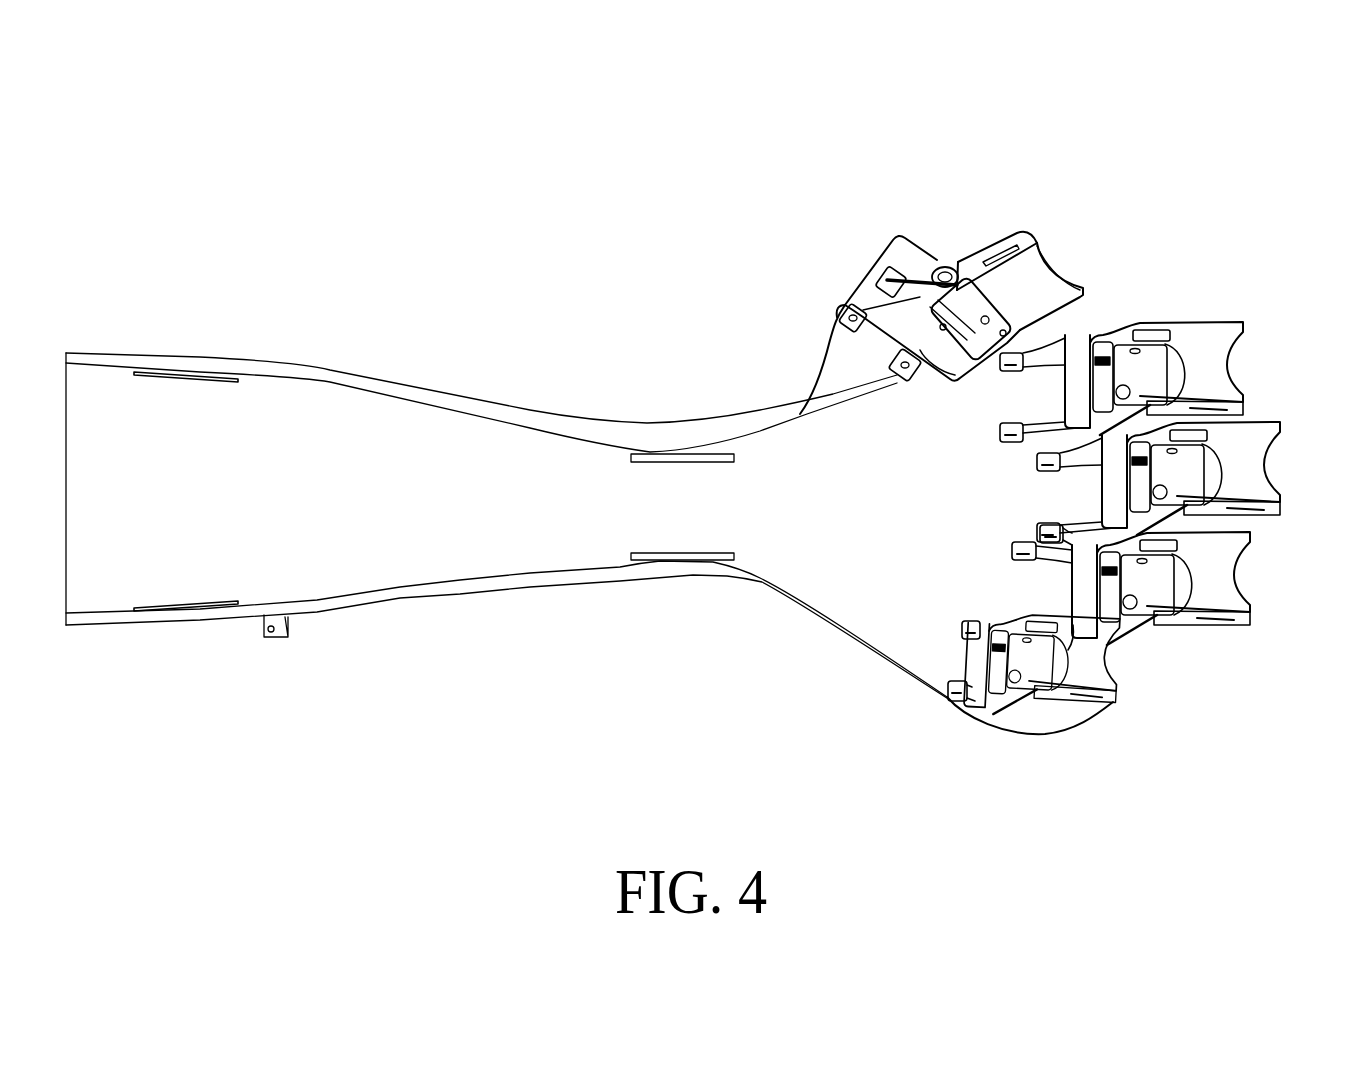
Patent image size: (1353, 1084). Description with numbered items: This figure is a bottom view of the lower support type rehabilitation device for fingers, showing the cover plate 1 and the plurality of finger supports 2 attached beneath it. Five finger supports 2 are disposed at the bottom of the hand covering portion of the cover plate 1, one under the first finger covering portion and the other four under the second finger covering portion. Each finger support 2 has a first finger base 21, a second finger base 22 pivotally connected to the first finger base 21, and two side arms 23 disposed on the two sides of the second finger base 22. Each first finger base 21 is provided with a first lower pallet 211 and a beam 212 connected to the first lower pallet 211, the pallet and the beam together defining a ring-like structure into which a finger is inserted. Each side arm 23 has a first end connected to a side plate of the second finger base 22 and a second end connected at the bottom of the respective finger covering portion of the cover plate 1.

The cover plate 1 is at (416, 345).
The finger supports 2 is at (981, 406).
The first finger base 21 is at (847, 280).
The first lower pallet 211 is at (1032, 283).
The beam 212 is at (942, 268).
The second finger base 22 is at (985, 240).
The side arms 23 is at (912, 278).